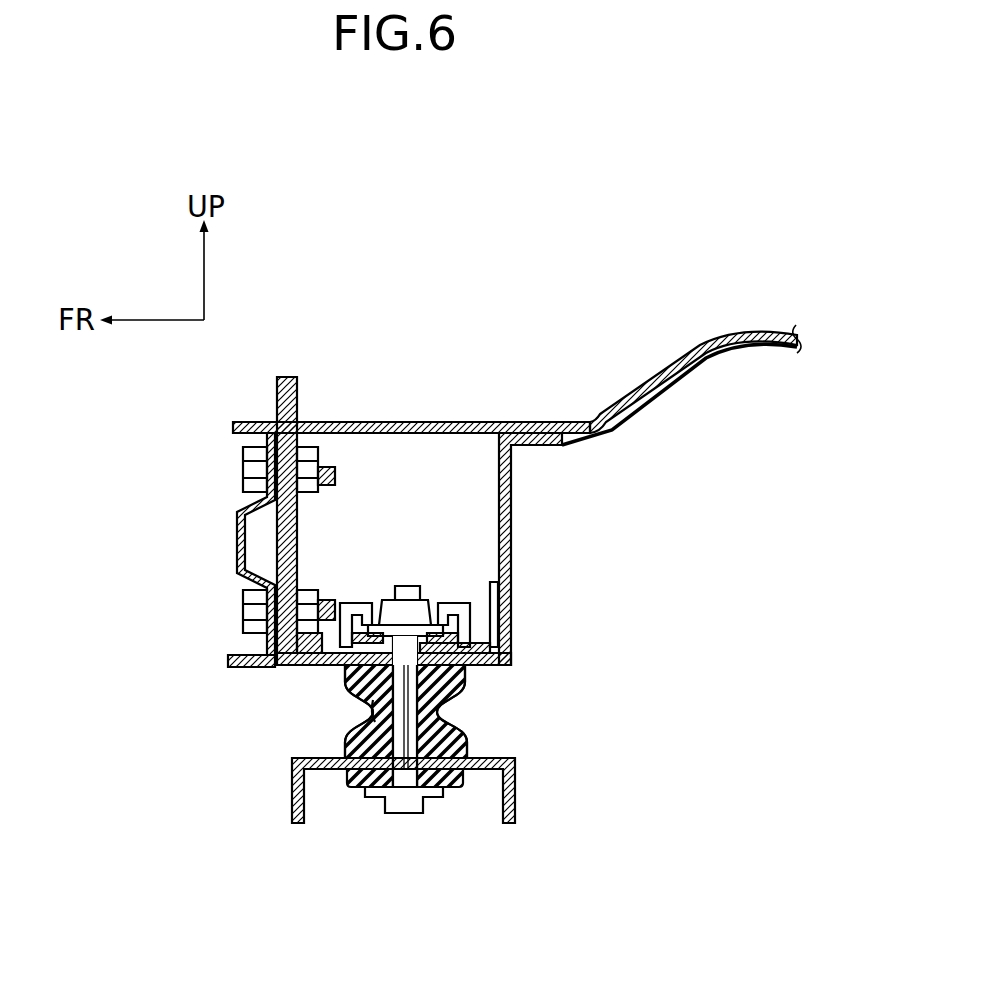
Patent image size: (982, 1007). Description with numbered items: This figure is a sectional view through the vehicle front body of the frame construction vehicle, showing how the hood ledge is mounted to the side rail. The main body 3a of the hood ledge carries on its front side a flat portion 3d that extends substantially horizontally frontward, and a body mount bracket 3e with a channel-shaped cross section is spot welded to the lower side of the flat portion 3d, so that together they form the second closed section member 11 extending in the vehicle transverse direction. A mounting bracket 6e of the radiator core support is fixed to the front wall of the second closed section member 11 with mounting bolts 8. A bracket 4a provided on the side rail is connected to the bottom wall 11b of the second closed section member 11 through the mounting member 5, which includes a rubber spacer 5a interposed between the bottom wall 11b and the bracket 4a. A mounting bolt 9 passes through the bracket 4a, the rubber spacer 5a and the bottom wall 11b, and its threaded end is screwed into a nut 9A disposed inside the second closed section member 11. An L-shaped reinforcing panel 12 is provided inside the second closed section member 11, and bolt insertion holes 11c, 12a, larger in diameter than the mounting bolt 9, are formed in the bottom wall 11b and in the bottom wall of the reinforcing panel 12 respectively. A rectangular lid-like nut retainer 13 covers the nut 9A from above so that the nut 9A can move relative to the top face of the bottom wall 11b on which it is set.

The main body of hood ledge 3a is at (718, 343).
The flat portion 3d is at (499, 426).
The body mount bracket 3e is at (516, 542).
The bracket 4a is at (513, 773).
The mounting member 5 is at (323, 698).
The rubber spacer 5a is at (468, 690).
The mounting bracket 6e is at (243, 584).
The mounting bolt 8 is at (255, 470).
The mounting bolt 9 is at (402, 805).
The nut 9A is at (383, 598).
The second closed section member 11 is at (442, 558).
The bottom wall 11b is at (490, 667).
The bolt insertion hole 11c is at (362, 702).
The reinforcing panel 12 is at (298, 546).
The bolt insertion hole 12a is at (438, 605).
The nut retainer 13 is at (478, 615).